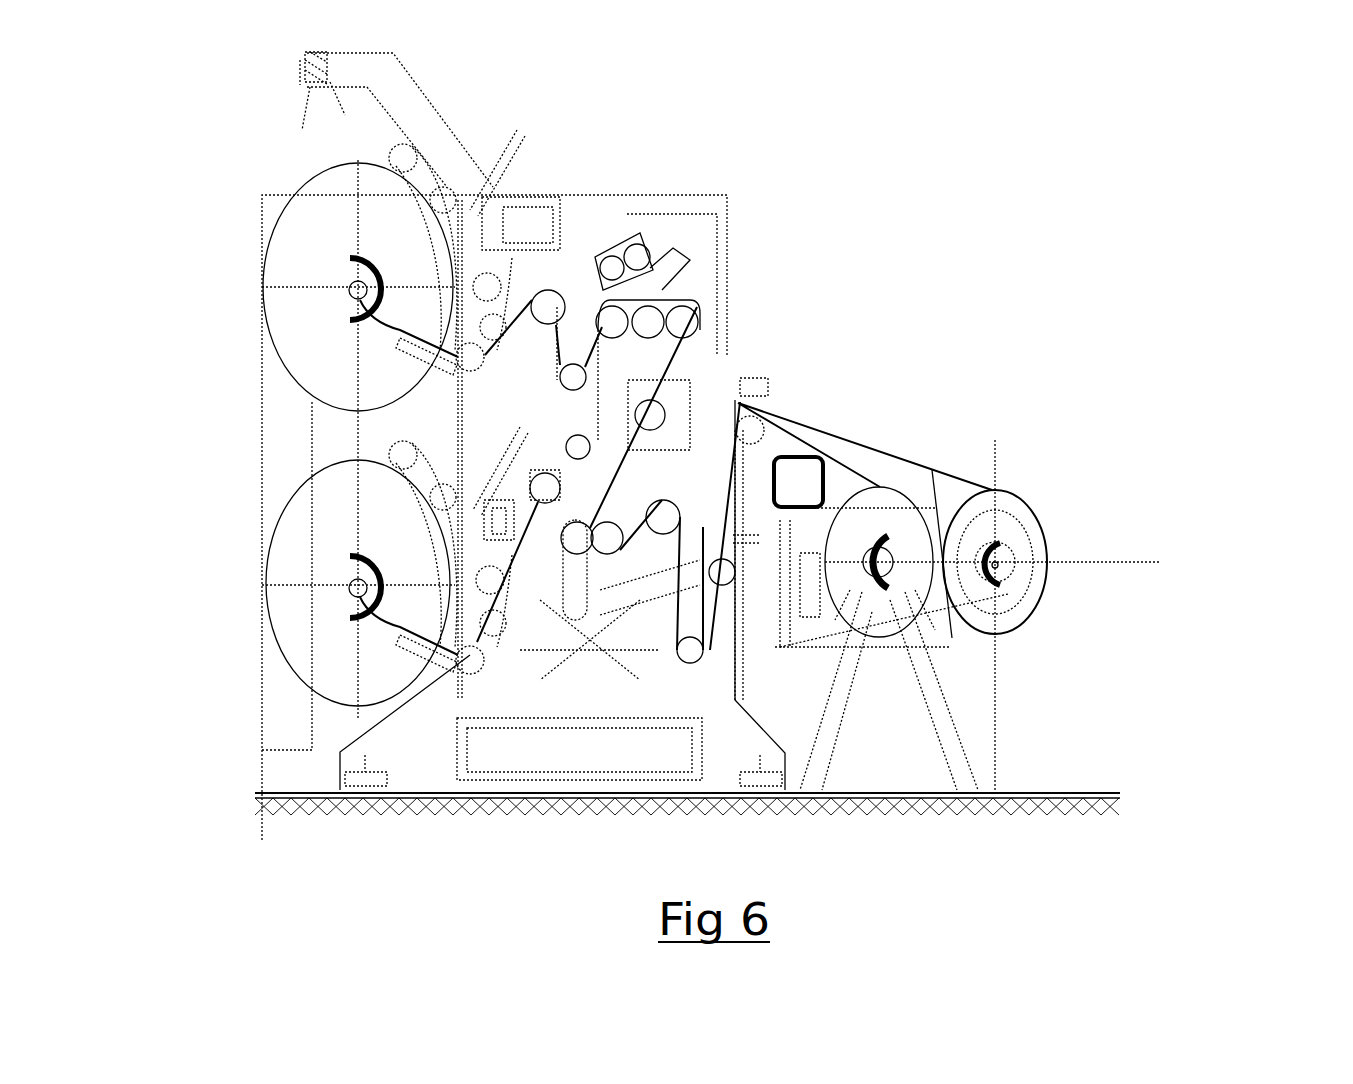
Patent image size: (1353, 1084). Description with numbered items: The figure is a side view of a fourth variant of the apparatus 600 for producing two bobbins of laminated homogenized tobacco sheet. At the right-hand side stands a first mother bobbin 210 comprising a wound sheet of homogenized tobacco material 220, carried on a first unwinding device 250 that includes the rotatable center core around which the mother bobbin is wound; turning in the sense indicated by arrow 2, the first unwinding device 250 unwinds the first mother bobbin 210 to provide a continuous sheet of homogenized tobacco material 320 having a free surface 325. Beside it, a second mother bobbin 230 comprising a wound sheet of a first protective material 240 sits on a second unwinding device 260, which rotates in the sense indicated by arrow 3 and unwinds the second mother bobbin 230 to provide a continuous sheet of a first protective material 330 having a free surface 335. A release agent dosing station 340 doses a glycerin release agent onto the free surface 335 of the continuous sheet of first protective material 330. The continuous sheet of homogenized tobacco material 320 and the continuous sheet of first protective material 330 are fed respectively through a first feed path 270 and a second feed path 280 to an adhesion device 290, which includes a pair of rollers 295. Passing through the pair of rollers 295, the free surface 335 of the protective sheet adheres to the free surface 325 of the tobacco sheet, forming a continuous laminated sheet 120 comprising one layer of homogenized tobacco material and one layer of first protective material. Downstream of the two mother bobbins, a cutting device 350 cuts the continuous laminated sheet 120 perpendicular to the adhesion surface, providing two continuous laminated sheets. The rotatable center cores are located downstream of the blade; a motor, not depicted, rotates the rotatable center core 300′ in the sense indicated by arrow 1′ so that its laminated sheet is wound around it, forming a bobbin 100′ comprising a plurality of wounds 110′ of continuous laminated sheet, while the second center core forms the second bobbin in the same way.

The apparatus 600 is at (1040, 160).
The rotatable center core 300′ is at (358, 588).
The wounds 110′ is at (342, 655).
The bobbin 100′ is at (262, 507).
The arrow 1′ is at (345, 572).
The continuous laminated sheet 120 is at (555, 457).
The pair of rollers 295 is at (607, 548).
The cutting device 350 is at (683, 247).
The adhesion device 290 is at (757, 300).
The first feed path 270 is at (890, 437).
The second feed path 280 is at (862, 462).
The free surface 335 is at (843, 457).
The release agent dosing station 340 is at (790, 454).
The continuous sheet of a first protective material 330 is at (880, 472).
The second mother bobbin 230 is at (960, 472).
The arrow 3 is at (879, 550).
The continuous sheet of homogenized tobacco material 320 is at (960, 467).
The first mother bobbin 210 is at (1042, 507).
The arrow 2 is at (986, 558).
The first unwinding device 250 is at (995, 566).
The wound sheet of homogenized tobacco material 220 is at (1033, 602).
The free surface 325 is at (975, 572).
The wound sheet of a first protective material 240 is at (840, 590).
The second unwinding device 260 is at (880, 578).